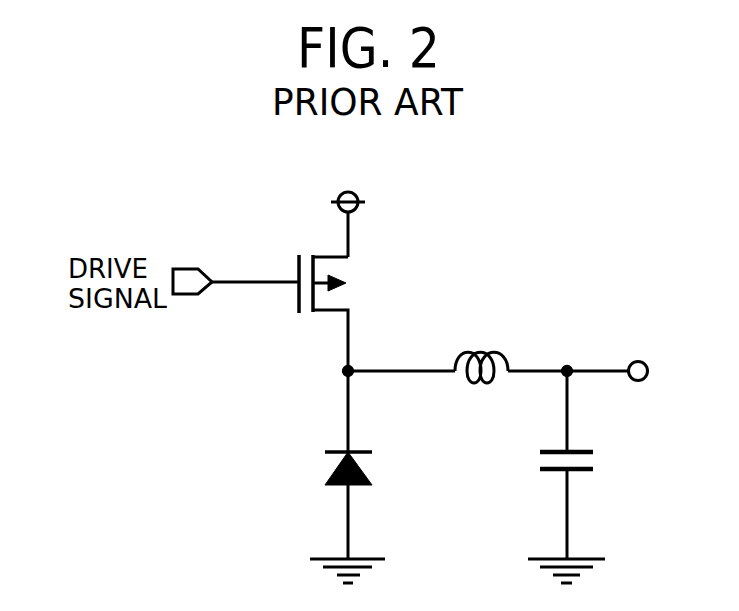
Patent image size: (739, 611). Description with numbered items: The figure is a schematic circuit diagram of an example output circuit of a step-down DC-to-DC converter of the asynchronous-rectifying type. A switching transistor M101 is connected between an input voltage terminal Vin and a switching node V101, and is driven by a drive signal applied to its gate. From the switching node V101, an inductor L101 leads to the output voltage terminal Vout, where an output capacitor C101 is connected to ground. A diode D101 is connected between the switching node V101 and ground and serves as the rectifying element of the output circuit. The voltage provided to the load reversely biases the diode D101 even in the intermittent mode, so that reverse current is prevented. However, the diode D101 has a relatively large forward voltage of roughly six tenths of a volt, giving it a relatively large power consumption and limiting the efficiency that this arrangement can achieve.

The switching transistor (MOSFET) M101 is at (314, 291).
The switching node V101 is at (346, 370).
The inductor L101 is at (485, 350).
The output capacitor C101 is at (536, 477).
The diode D101 is at (321, 477).
The input voltage terminal Vin is at (349, 185).
The output voltage terminal Vout is at (617, 357).